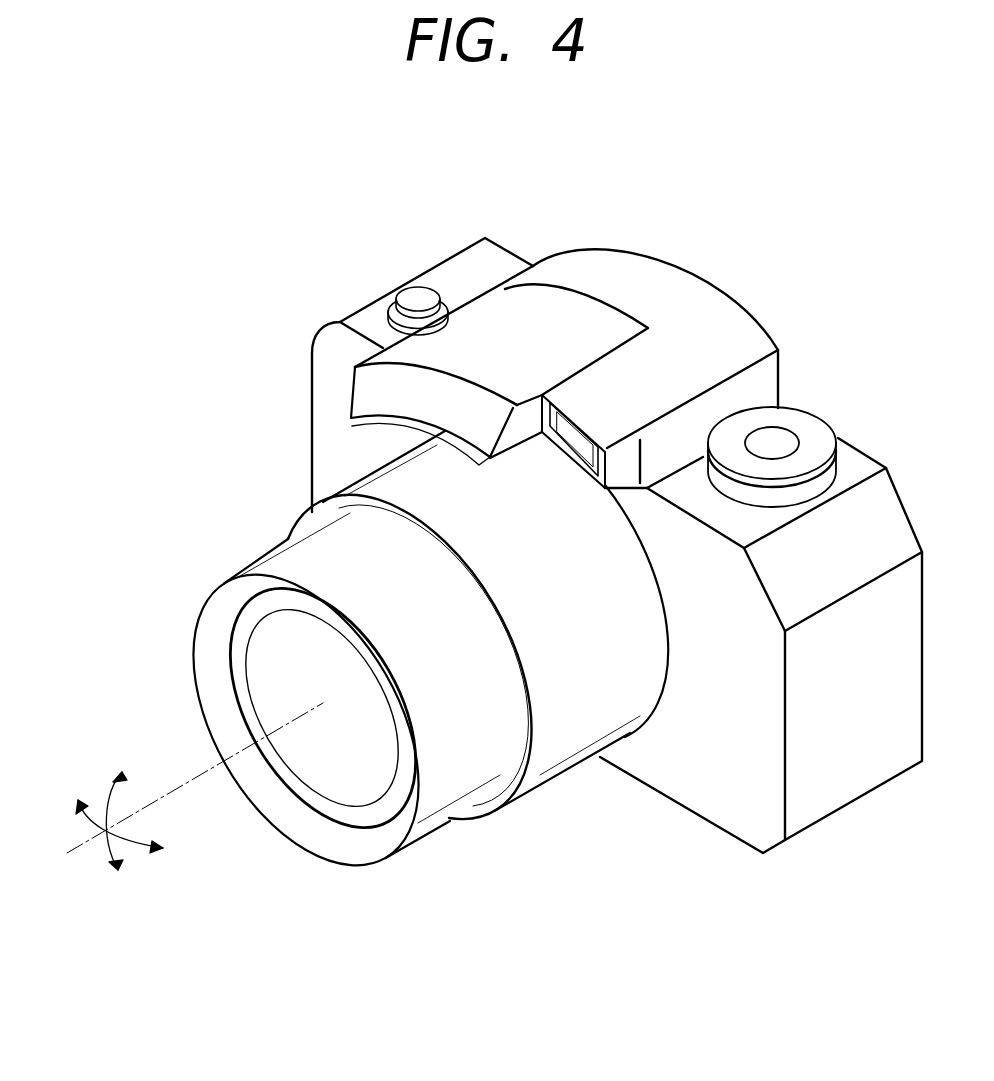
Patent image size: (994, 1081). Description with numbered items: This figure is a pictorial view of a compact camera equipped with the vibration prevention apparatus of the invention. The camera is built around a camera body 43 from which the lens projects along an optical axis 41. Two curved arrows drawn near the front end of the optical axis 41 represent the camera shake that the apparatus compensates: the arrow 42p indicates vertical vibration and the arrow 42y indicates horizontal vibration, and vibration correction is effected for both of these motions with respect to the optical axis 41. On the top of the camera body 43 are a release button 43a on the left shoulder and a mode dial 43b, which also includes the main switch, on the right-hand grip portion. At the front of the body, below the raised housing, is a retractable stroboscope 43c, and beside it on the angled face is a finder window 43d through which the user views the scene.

The optical axis 41 is at (193, 784).
The arrow indicating vertical vibration 42p is at (106, 798).
The arrow indicating horizontal vibration 42y is at (135, 847).
The camera body 43 is at (651, 249).
The release button 43a is at (405, 291).
The mode dial 43b is at (806, 405).
The retractable stroboscope 43c is at (356, 388).
The finder window 43d is at (556, 440).